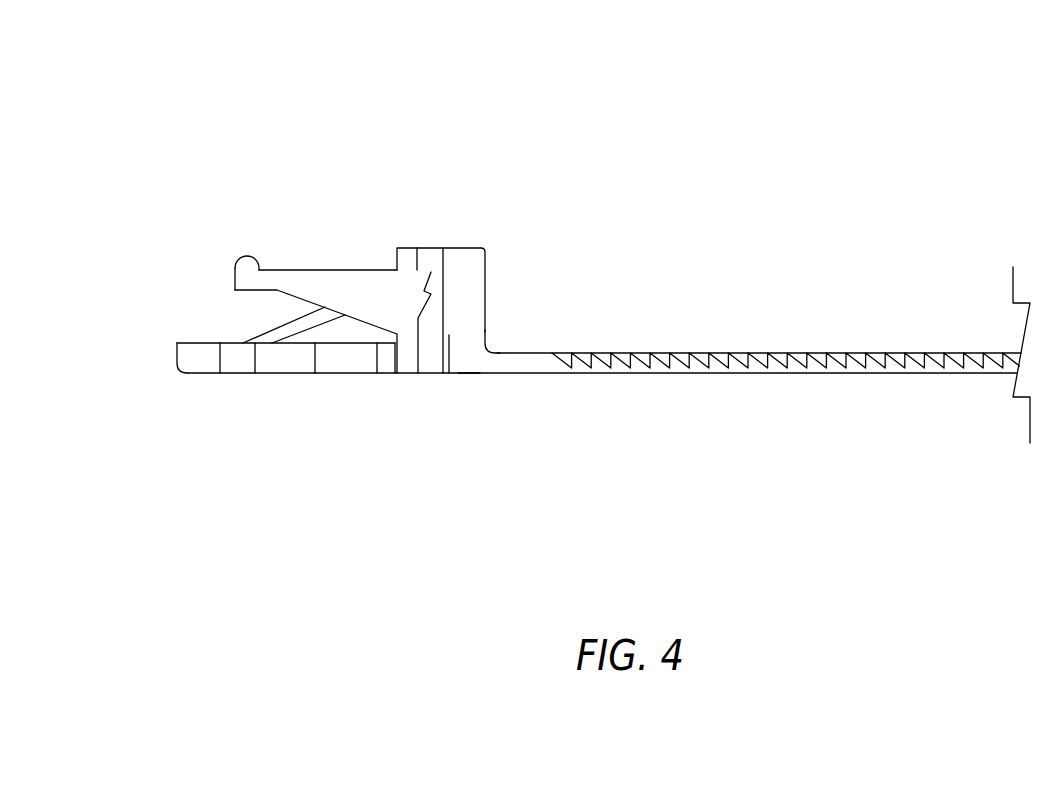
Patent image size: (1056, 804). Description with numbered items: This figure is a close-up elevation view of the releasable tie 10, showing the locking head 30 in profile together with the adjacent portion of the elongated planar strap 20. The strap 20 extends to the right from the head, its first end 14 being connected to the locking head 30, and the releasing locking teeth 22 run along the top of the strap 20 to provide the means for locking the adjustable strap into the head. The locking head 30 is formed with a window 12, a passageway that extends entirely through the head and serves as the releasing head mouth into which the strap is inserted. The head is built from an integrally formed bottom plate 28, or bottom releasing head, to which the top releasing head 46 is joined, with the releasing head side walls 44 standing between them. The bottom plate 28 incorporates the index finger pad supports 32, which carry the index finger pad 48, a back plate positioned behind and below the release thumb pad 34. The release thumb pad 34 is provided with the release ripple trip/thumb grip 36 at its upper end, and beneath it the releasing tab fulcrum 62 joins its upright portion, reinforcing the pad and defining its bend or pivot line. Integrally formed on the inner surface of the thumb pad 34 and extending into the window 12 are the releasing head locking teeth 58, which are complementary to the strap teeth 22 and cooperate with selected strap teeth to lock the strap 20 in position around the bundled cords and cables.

The releasable tie 10 is at (542, 116).
The window 12 is at (423, 249).
The first end 14 is at (520, 362).
The elongated planar strap 20 is at (820, 243).
The releasing locking teeth 22 is at (692, 354).
The bottom plate 28 is at (468, 373).
The locking head 30 is at (131, 288).
The index finger pad supports 32 is at (288, 330).
The release thumb pad 34 is at (283, 271).
The release ripple trip/thumb grip 36 is at (246, 262).
The releasing head side walls 44 is at (449, 373).
The top releasing head 46 is at (485, 249).
The index finger pad 48 is at (275, 362).
The releasing head locking teeth 58 is at (422, 272).
The releasing tab fulcrum 62 is at (398, 335).